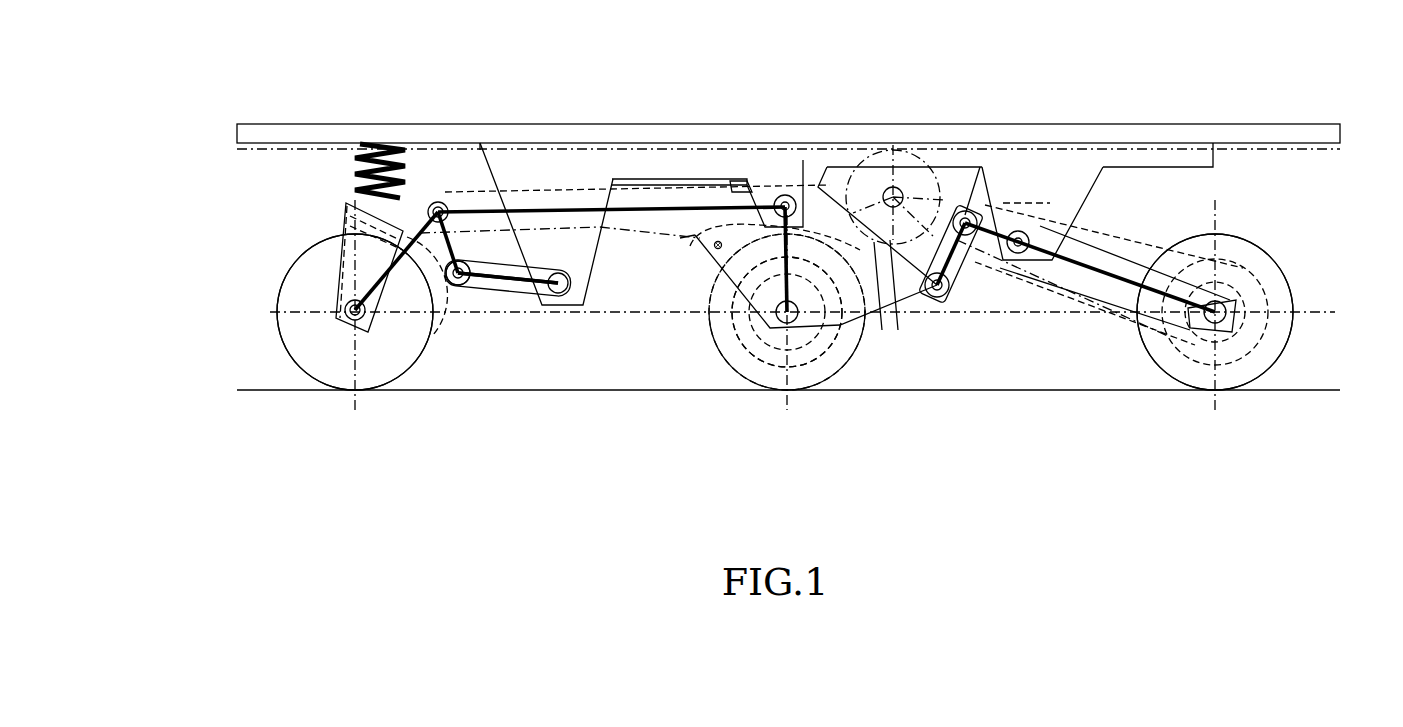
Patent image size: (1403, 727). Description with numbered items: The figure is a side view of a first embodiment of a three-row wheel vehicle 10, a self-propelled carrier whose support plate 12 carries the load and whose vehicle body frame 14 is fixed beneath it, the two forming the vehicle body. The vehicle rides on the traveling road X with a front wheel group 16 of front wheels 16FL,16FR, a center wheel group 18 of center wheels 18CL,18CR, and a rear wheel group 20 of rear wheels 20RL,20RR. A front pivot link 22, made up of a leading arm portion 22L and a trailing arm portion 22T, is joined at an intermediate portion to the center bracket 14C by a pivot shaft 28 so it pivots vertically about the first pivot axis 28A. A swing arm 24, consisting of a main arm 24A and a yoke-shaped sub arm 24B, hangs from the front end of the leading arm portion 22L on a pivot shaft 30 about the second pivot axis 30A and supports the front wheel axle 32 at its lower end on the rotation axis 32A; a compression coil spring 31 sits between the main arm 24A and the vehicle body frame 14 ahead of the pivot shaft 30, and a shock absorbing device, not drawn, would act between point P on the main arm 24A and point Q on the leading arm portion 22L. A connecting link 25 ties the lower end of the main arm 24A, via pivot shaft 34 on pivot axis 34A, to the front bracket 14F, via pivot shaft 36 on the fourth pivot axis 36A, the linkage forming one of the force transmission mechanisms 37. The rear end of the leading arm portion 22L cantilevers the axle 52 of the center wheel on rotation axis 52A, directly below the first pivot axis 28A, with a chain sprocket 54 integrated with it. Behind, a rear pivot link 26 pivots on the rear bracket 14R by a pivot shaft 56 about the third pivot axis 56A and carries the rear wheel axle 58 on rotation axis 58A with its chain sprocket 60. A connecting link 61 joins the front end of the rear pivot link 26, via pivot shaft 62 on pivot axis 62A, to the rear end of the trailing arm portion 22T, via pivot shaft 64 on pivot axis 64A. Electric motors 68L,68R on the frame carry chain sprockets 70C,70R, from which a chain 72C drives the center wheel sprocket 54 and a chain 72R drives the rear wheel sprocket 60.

The three-row wheel vehicle 10 is at (252, 100).
The support plate 12 is at (1293, 131).
The vehicle body frame 14 is at (1152, 158).
The front bracket 14F is at (576, 268).
The center bracket 14C is at (753, 198).
The rear bracket 14R is at (1062, 195).
The front wheel group 16 is at (298, 376).
The front wheels 16FL,16FR is at (303, 345).
The center wheel group 18 is at (728, 375).
The center wheels 18CL,18CR is at (898, 302).
The rear wheel group 20 is at (1161, 382).
The rear wheels 20RL,20RR is at (1245, 378).
The front pivot link 22 is at (641, 178).
The leading arm portion 22L is at (565, 196).
The trailing arm portion 22T is at (900, 336).
The swing arm 24 is at (333, 222).
The main arm 24A is at (360, 206).
The sub arm 24B is at (343, 270).
The connecting link 25 is at (507, 268).
The rear pivot link 26 is at (1127, 247).
The pivot shaft 28 is at (781, 198).
The first pivot axis 28A is at (803, 160).
The pivot shaft 30 is at (447, 206).
The second pivot axis 30A is at (436, 203).
The compression coil spring 31 is at (372, 158).
The axle 32 is at (341, 335).
The rotation axis 32A is at (344, 306).
The pivot shaft 34 is at (434, 302).
The pivot axis 34A is at (462, 287).
The pivot shaft 36 is at (558, 294).
The fourth pivot axis 36A is at (575, 300).
The force transmission mechanism 37 is at (523, 301).
The axle 52 is at (775, 320).
The rotation axis 52A is at (787, 338).
The chain sprocket 54 is at (806, 366).
The pivot shaft 56 is at (1020, 256).
The third pivot axis 56A is at (1020, 232).
The axle 58 is at (1248, 288).
The rotation axis 58A is at (1250, 335).
The chain sprocket 60 is at (1244, 263).
The connecting link 61 is at (972, 273).
The pivot shaft 62 is at (968, 210).
The pivot axis 62A is at (958, 212).
The pivot shaft 64 is at (940, 298).
The pivot axis 64A is at (950, 298).
The electric motors 68L,68R is at (824, 178).
The chain sprockets 70C,70R is at (893, 150).
The chain 72C is at (700, 238).
The chain 72R is at (1082, 300).
The point P is at (478, 300).
The point Q is at (712, 250).
The traveling road X is at (626, 392).